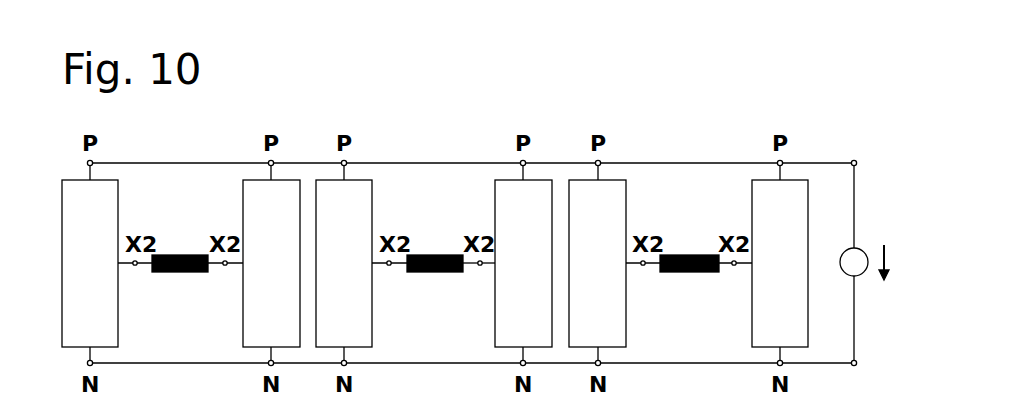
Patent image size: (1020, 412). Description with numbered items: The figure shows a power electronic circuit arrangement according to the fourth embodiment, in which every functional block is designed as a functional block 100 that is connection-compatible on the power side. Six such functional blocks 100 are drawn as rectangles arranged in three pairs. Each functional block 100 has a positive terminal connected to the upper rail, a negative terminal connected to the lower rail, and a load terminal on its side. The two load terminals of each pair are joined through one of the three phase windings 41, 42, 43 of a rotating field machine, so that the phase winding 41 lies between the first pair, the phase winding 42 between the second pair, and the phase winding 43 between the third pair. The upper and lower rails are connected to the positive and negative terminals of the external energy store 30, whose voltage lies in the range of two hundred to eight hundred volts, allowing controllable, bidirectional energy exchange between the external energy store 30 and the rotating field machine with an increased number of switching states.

The functional block 100 is at (253, 217).
The phase winding 41 is at (180, 280).
The phase winding 42 is at (433, 280).
The phase winding 43 is at (689, 280).
The external energy store 30 is at (857, 273).